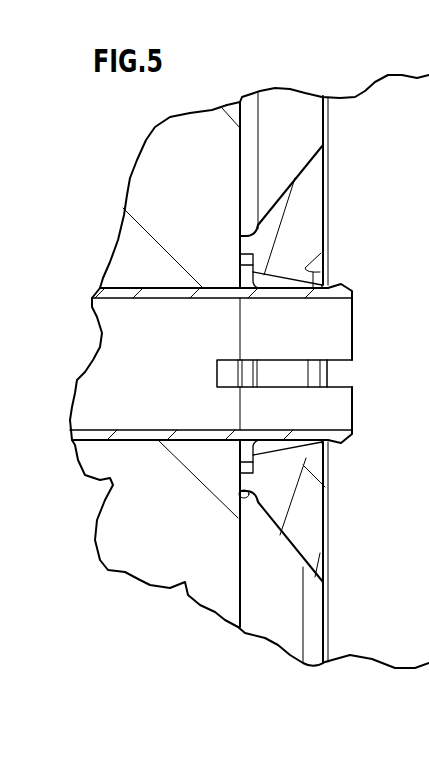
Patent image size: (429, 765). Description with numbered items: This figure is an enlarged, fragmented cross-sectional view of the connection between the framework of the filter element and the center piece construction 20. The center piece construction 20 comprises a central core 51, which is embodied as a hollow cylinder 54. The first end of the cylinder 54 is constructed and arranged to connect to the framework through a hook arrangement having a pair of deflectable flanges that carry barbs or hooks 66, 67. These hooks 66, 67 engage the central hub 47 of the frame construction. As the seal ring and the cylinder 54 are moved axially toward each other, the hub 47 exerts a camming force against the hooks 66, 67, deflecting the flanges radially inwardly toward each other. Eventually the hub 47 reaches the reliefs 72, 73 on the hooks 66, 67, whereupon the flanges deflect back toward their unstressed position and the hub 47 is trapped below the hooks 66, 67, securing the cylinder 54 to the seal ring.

The center piece construction 20 is at (129, 288).
The hollow cylinder 54 is at (177, 288).
The relief 72 is at (325, 281).
The hook 66 is at (333, 284).
The central hub 47 is at (329, 373).
The hook 67 is at (343, 445).
The relief 73 is at (330, 443).
The central core 51 is at (133, 441).